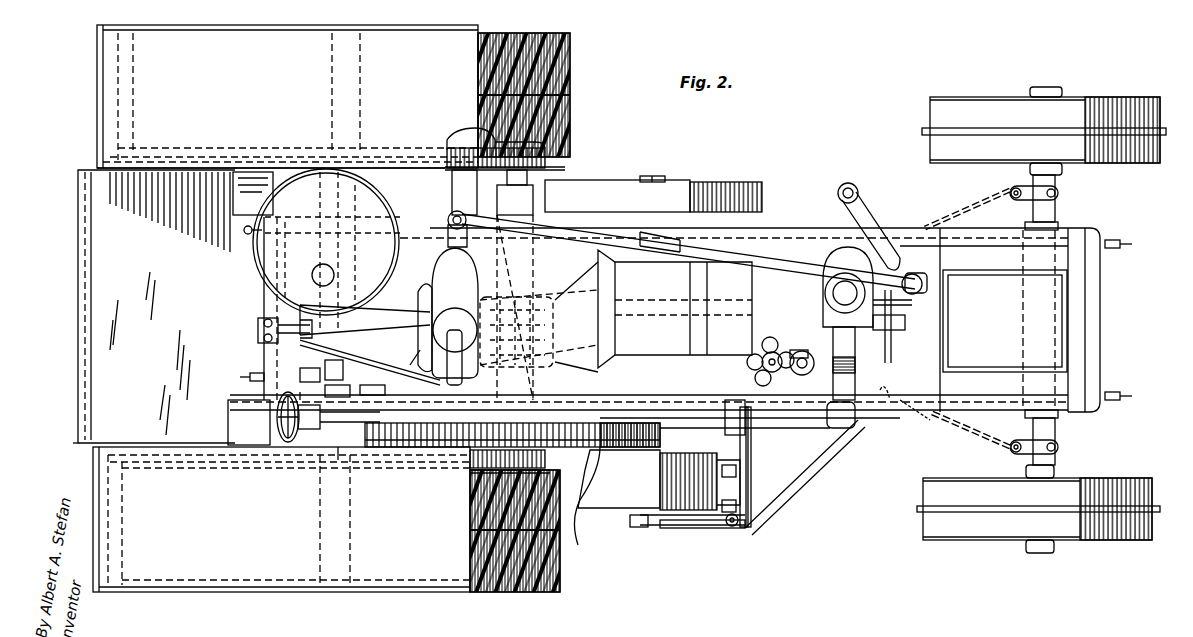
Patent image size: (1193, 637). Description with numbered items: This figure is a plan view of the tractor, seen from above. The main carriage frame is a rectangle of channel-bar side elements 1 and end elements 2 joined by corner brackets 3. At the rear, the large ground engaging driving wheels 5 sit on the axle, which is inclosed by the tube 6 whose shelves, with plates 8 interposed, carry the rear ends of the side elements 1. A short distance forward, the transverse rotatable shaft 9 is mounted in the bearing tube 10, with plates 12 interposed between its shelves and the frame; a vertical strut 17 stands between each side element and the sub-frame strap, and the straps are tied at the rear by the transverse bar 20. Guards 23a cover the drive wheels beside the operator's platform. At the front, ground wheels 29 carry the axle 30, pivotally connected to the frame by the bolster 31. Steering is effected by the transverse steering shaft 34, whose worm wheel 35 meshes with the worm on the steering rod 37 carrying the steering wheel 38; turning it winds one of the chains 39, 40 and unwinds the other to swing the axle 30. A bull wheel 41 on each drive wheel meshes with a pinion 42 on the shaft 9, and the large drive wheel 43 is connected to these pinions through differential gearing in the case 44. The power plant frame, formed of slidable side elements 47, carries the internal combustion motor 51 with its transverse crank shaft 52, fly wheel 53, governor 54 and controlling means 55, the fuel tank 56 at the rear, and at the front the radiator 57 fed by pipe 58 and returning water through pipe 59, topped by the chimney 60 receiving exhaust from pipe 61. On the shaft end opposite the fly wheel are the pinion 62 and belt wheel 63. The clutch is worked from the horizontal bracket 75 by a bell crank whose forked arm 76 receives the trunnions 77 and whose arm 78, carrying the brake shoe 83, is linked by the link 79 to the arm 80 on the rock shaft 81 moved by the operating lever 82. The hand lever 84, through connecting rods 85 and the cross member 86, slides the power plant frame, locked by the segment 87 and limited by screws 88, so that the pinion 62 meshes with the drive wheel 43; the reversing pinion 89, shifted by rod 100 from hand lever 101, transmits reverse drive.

The side element 1 is at (878, 228).
The end element 2 is at (262, 298).
The corner bracket 3 is at (1106, 418).
The ground engaging supporting and driving wheel 5 is at (530, 33).
The tube 6 is at (372, 178).
The plate 8 is at (300, 374).
The transverse rotatable shaft 9 is at (617, 196).
The bearing tube 10 is at (510, 203).
The plate 12 is at (493, 243).
The vertical strut 17 is at (898, 216).
The transverse bar 20 is at (76, 447).
The guard 23a is at (262, 38).
The ground wheel 29 is at (1155, 505).
The axle 30 is at (1055, 206).
The bolster 31 is at (1026, 226).
The transverse steering shaft 34 is at (790, 440).
The worm wheel 35 is at (835, 432).
The steering rod 37 is at (318, 440).
The steering wheel 38 is at (285, 440).
The chain 39 is at (968, 210).
The chain 40 is at (993, 433).
The bull wheel 41 is at (460, 148).
The pinion 42 is at (565, 168).
The drive wheel 43 is at (398, 447).
The case 44 is at (586, 506).
The side element 47 is at (905, 432).
The internal combustion motor 51 is at (672, 286).
The crank shaft 52 is at (665, 212).
The fly wheel 53 is at (642, 180).
The governor 54 is at (760, 340).
The controlling means 55 is at (392, 380).
The fuel tank 56 is at (392, 258).
The radiator 57 is at (1065, 265).
The pipe 58 is at (912, 332).
The pipe 59 is at (945, 296).
The chimney 60 is at (948, 340).
The pipe 61 is at (920, 272).
The pinion 62 is at (628, 447).
The belt wheel 63 is at (606, 498).
The horizontal bracket 75 is at (748, 460).
The arm 76 is at (700, 528).
The trunnion 77 is at (655, 528).
The arm 78 is at (770, 470).
The link 79 is at (372, 447).
The arm 80 is at (328, 420).
The rock shaft 81 is at (342, 447).
The operating lever 82 is at (325, 370).
The brake shoe 83 is at (740, 500).
The hand lever 84 is at (398, 312).
The connecting rod 85 is at (406, 310).
The cross member 86 is at (545, 298).
The segment 87 is at (265, 330).
The screw 88 is at (1125, 246).
The reversing pinion 89 is at (745, 444).
The rod 100 is at (400, 420).
The hand lever 101 is at (398, 440).